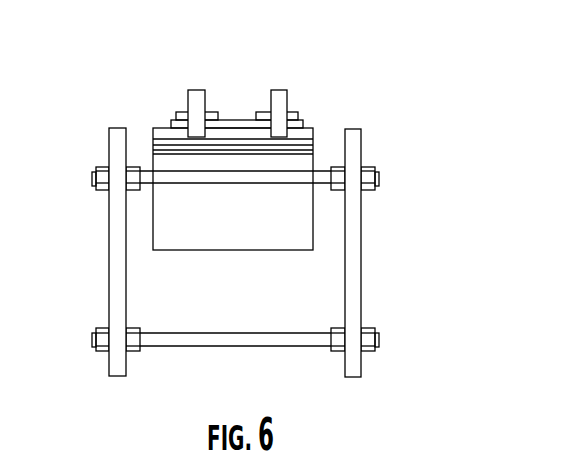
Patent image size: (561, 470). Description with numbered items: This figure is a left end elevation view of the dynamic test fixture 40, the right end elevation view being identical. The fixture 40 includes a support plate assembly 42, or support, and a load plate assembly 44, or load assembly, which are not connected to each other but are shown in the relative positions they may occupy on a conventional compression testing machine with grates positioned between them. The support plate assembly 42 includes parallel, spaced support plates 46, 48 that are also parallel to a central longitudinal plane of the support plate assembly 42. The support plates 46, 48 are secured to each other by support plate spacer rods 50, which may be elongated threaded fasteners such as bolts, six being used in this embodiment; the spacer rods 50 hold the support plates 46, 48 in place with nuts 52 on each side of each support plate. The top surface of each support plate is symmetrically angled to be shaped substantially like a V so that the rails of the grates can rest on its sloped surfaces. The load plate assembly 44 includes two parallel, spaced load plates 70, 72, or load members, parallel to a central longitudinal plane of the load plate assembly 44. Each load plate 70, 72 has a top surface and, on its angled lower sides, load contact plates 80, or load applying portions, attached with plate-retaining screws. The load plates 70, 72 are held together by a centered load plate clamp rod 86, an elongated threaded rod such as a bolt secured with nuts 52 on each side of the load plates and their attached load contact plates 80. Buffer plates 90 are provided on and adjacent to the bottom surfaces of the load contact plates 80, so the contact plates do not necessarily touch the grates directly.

The dynamic test fixture 40 is at (270, 200).
The support plate assembly 42 is at (227, 255).
The load plate assembly 44 is at (245, 155).
The support plate 46 is at (352, 232).
The support plate 48 is at (114, 237).
The support plate spacer rod 50 is at (205, 180).
The nut 52 is at (102, 335).
The load plate 70 is at (283, 88).
The load plate 72 is at (195, 88).
The load contact plate 80 is at (163, 136).
The load plate clamp rod 86 is at (237, 118).
The buffer plate 90 is at (232, 232).